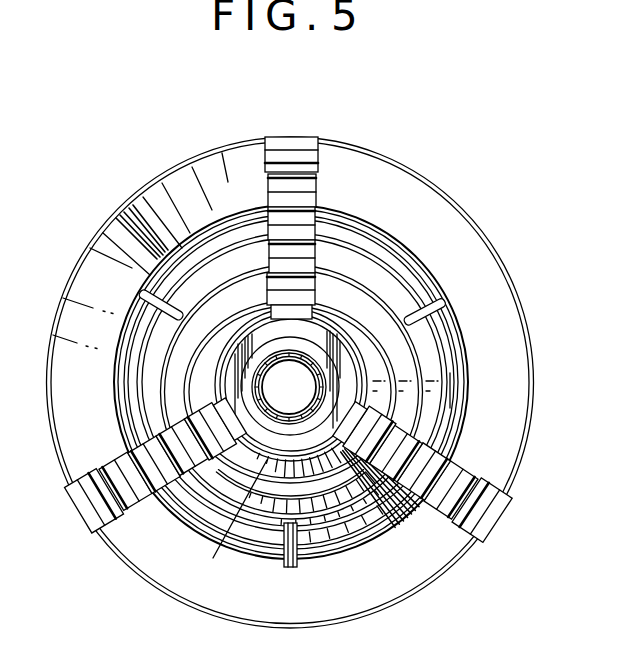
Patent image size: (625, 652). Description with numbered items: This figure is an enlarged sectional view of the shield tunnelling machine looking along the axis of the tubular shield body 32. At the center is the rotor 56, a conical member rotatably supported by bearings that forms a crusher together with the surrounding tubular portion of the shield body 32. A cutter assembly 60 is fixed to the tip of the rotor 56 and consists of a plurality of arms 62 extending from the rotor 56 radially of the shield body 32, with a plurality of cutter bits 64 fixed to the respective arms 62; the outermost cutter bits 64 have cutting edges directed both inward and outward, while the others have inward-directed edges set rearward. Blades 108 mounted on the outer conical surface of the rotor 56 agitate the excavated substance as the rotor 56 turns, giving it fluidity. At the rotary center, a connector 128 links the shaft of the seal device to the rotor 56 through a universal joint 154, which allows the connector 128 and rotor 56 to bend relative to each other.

The shield body 32 is at (417, 168).
The rotor 56 is at (367, 537).
The cutter assembly 60 is at (303, 137).
The arm 62 is at (310, 243).
The cutter bit 64 is at (313, 196).
The blade 108 is at (140, 292).
The connector 128 is at (318, 380).
The universal joint 154 is at (215, 554).